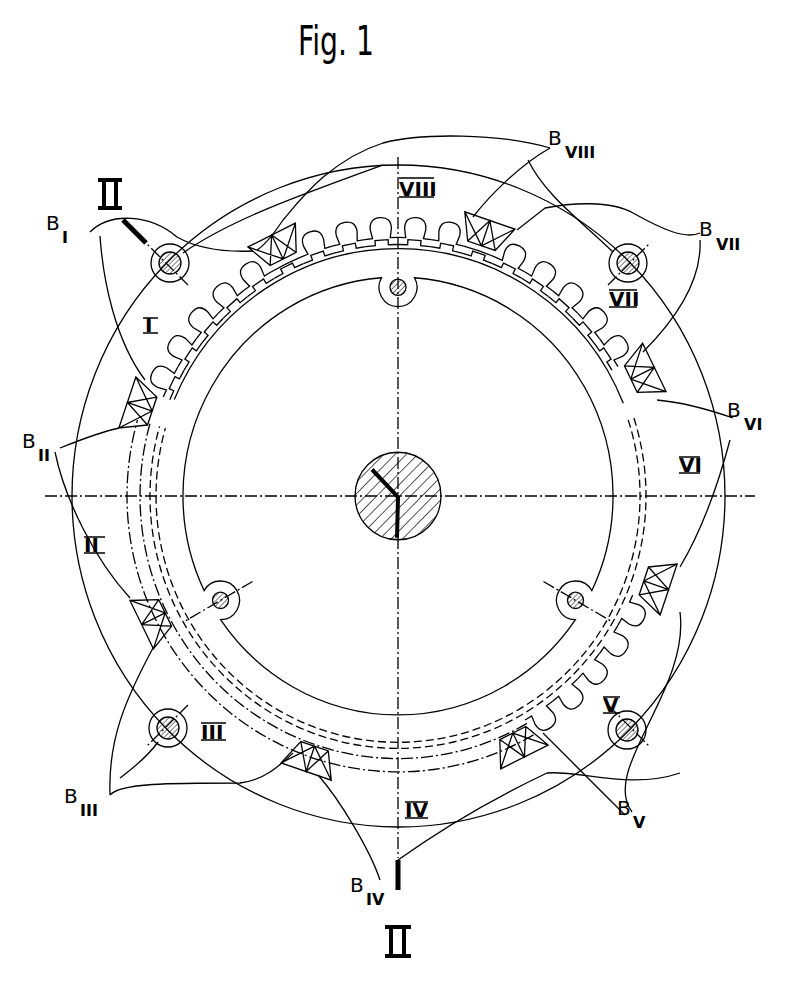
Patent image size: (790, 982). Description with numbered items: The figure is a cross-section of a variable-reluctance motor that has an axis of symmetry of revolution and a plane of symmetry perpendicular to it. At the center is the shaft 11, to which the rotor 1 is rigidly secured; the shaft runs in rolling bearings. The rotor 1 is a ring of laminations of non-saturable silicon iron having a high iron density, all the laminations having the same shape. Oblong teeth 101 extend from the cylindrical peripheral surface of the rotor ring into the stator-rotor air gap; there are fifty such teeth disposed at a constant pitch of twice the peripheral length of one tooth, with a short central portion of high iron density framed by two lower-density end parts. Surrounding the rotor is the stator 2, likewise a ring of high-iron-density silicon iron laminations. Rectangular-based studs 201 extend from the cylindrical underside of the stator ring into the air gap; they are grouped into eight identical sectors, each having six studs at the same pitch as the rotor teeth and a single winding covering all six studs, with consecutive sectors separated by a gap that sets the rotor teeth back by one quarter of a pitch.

The rotor 1 is at (398, 496).
The teeth 101 is at (263, 289).
The stator 2 is at (389, 492).
The studs 201 is at (257, 265).
The shaft 11 is at (440, 489).